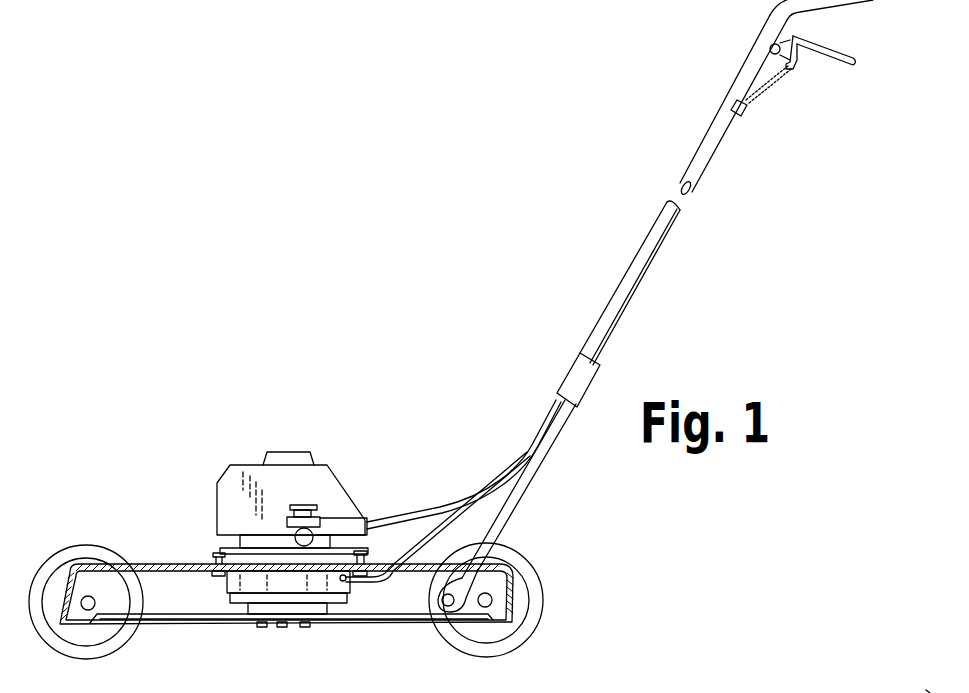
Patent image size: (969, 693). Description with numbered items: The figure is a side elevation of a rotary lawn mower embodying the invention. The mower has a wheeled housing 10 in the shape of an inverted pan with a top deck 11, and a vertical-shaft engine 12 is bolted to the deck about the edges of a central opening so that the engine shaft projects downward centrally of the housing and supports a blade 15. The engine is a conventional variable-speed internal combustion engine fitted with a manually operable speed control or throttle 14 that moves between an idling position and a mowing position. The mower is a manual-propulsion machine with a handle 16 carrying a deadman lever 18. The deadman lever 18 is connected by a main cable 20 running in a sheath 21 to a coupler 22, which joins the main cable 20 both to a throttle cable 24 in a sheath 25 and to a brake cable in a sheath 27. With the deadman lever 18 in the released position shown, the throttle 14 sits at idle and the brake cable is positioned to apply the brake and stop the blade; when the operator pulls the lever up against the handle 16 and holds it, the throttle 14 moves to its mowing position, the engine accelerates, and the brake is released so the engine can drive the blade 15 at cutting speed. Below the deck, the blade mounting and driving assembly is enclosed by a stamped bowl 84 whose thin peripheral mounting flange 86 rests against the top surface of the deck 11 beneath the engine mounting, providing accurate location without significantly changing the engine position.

The wheeled housing 10 is at (126, 552).
The top deck 11 is at (192, 566).
The engine 12 is at (335, 482).
The throttle 14 is at (282, 528).
The blade 15 is at (192, 625).
The handle 16 is at (790, 6).
The deadman lever 18 is at (850, 52).
The main cable 20 is at (767, 84).
The sheath 21 is at (713, 157).
The coupler 22 is at (583, 377).
The throttle cable 24 is at (347, 520).
The sheath 25 is at (423, 510).
The sheath 27 is at (427, 538).
The stamped bowl 84 is at (300, 592).
The peripheral mounting flange 86 is at (926, 692).